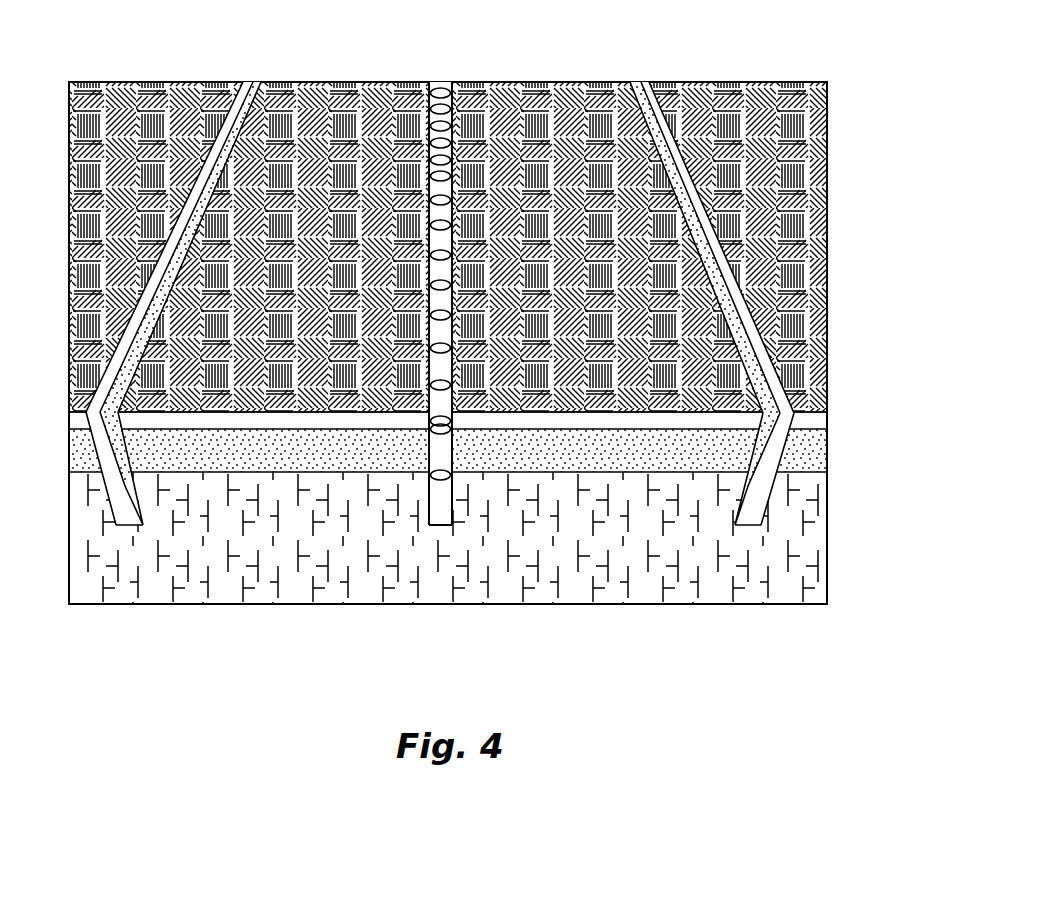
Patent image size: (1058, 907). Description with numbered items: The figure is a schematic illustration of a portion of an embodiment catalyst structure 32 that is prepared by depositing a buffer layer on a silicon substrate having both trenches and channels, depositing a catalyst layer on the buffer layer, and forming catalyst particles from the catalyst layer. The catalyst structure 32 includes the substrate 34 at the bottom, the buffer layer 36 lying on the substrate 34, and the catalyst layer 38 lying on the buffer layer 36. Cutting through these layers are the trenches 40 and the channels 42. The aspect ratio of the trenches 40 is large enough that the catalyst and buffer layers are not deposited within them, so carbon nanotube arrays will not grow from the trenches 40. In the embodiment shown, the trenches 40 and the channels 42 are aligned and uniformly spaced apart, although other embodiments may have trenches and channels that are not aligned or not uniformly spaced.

The catalyst structure 32 is at (187, 64).
The substrate 34 is at (803, 556).
The buffer layer 36 is at (790, 442).
The catalyst layer 38 is at (808, 413).
The trenches 40 is at (482, 371).
The channels 42 is at (432, 420).